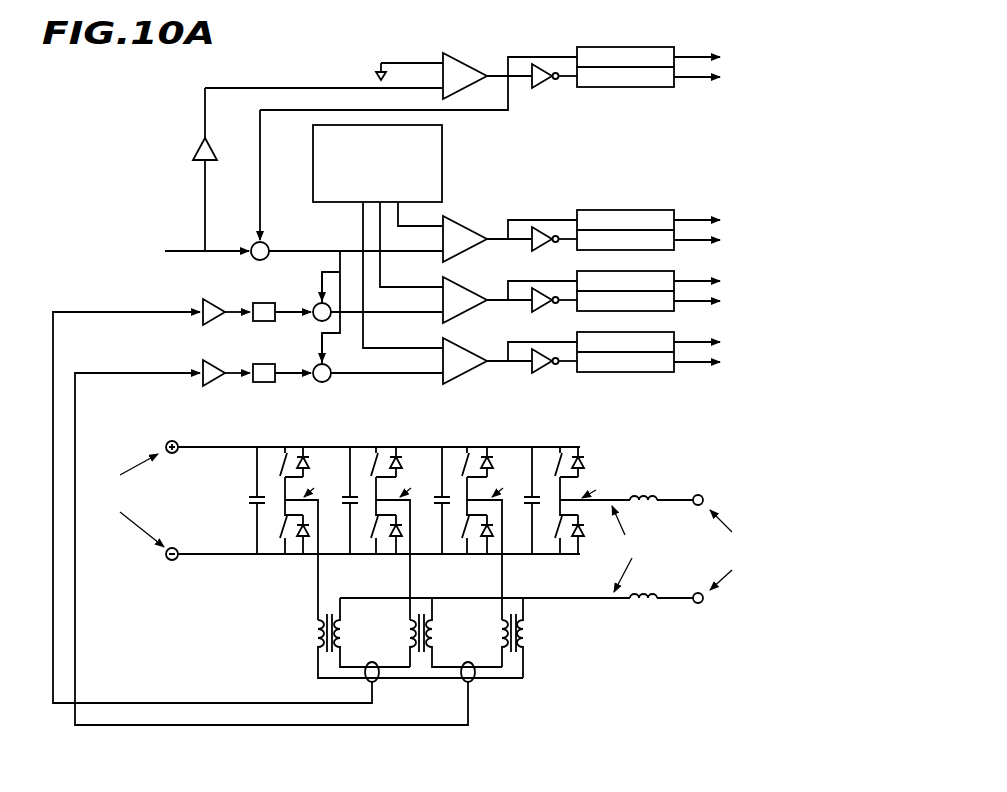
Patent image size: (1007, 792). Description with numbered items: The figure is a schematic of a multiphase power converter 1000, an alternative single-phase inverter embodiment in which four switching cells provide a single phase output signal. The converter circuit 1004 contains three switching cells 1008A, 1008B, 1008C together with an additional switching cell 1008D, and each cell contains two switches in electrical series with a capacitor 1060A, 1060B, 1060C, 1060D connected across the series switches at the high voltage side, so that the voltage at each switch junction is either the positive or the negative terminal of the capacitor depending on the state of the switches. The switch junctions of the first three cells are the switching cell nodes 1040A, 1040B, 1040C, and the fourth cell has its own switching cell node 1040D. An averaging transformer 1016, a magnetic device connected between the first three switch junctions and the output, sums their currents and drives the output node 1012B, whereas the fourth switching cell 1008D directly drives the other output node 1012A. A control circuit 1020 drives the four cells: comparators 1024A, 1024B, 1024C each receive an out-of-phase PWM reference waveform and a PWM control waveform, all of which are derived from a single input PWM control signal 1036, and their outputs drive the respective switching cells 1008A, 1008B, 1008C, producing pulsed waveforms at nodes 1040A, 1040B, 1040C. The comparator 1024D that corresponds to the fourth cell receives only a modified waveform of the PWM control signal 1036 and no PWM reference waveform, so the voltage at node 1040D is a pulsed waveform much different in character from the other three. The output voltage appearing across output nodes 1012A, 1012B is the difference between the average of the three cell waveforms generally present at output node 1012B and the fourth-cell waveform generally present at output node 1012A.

The multiphase power converter 1000 is at (740, 156).
The converter circuit 1004 is at (753, 454).
The switching cell 1008A is at (284, 438).
The switching cell 1008B is at (382, 438).
The switching cell 1008C is at (479, 438).
The switching cell 1008D is at (559, 438).
The output node 1012A is at (705, 499).
The output node 1012B is at (703, 600).
The averaging transformer 1016 is at (515, 691).
The control circuit 1020 is at (744, 385).
The comparator 1024A is at (458, 222).
The comparator 1024B is at (462, 288).
The comparator 1024C is at (462, 349).
The comparator 1024D is at (462, 62).
The input PWM control signal 1036 is at (190, 246).
The switching cell node 1040A is at (284, 478).
The switching cell node 1040B is at (424, 472).
The switching cell node 1040C is at (546, 496).
The switching cell node 1040D is at (618, 478).
The capacitor 1060A is at (250, 505).
The capacitor 1060B is at (335, 505).
The capacitor 1060C is at (428, 505).
The capacitor 1060D is at (530, 502).